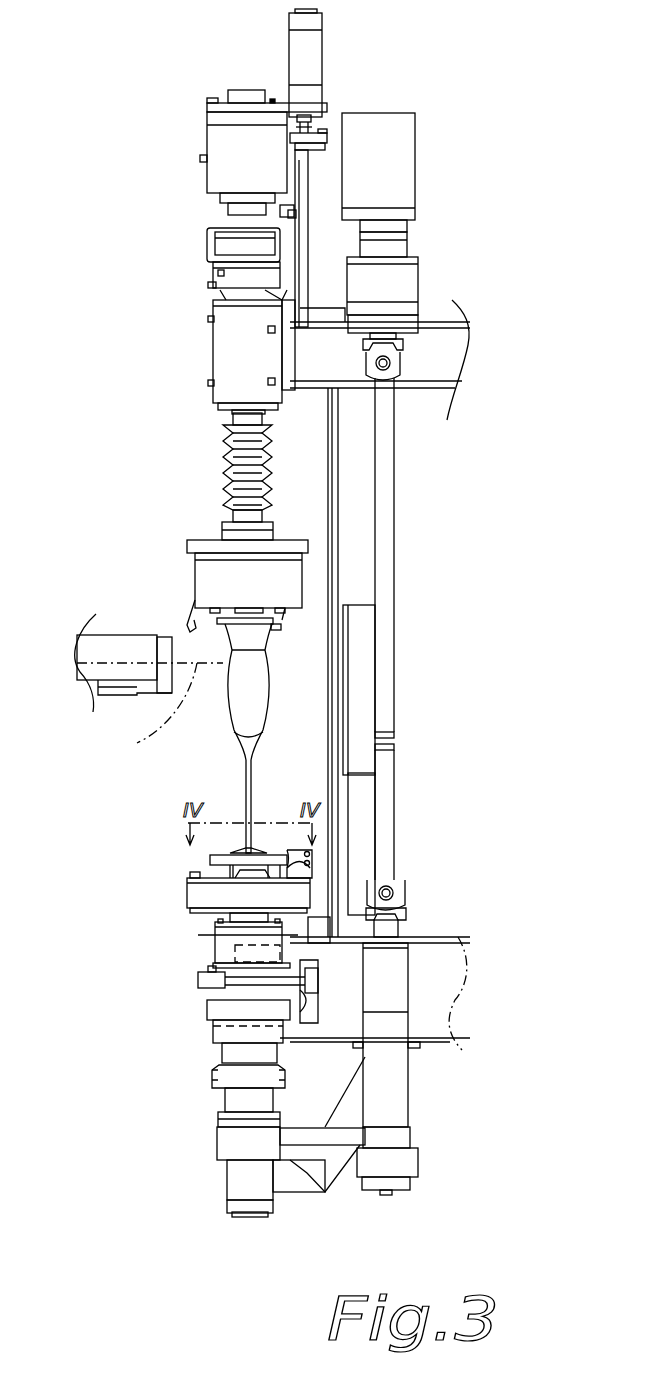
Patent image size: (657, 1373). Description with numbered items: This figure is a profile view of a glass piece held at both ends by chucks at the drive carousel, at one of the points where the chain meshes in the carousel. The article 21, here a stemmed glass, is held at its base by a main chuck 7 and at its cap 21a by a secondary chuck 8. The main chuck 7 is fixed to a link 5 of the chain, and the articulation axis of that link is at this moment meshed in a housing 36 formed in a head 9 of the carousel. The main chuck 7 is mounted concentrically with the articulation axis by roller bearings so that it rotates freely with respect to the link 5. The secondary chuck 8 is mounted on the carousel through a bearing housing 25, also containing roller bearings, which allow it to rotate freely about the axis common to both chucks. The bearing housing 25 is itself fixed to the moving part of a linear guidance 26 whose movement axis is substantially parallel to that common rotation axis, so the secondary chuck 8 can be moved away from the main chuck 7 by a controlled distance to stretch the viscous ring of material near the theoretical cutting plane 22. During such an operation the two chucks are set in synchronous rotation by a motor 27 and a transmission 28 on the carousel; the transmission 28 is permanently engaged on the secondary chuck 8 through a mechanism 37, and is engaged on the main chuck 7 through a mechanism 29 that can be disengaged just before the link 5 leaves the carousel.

The link 5 is at (247, 977).
The main chuck 7 is at (207, 895).
The secondary chuck 8 is at (213, 578).
The head 9 is at (178, 528).
The article 21 is at (247, 715).
The cap 21a is at (248, 643).
The theoretical cutting plane 22 is at (137, 743).
The bearing housing 25 is at (238, 345).
The linear guidance 26 is at (305, 298).
The motor 27 is at (387, 167).
The transmission 28 is at (383, 563).
The mechanism 29 is at (237, 1137).
The housing 36 is at (317, 1013).
The mechanism 37 is at (230, 242).